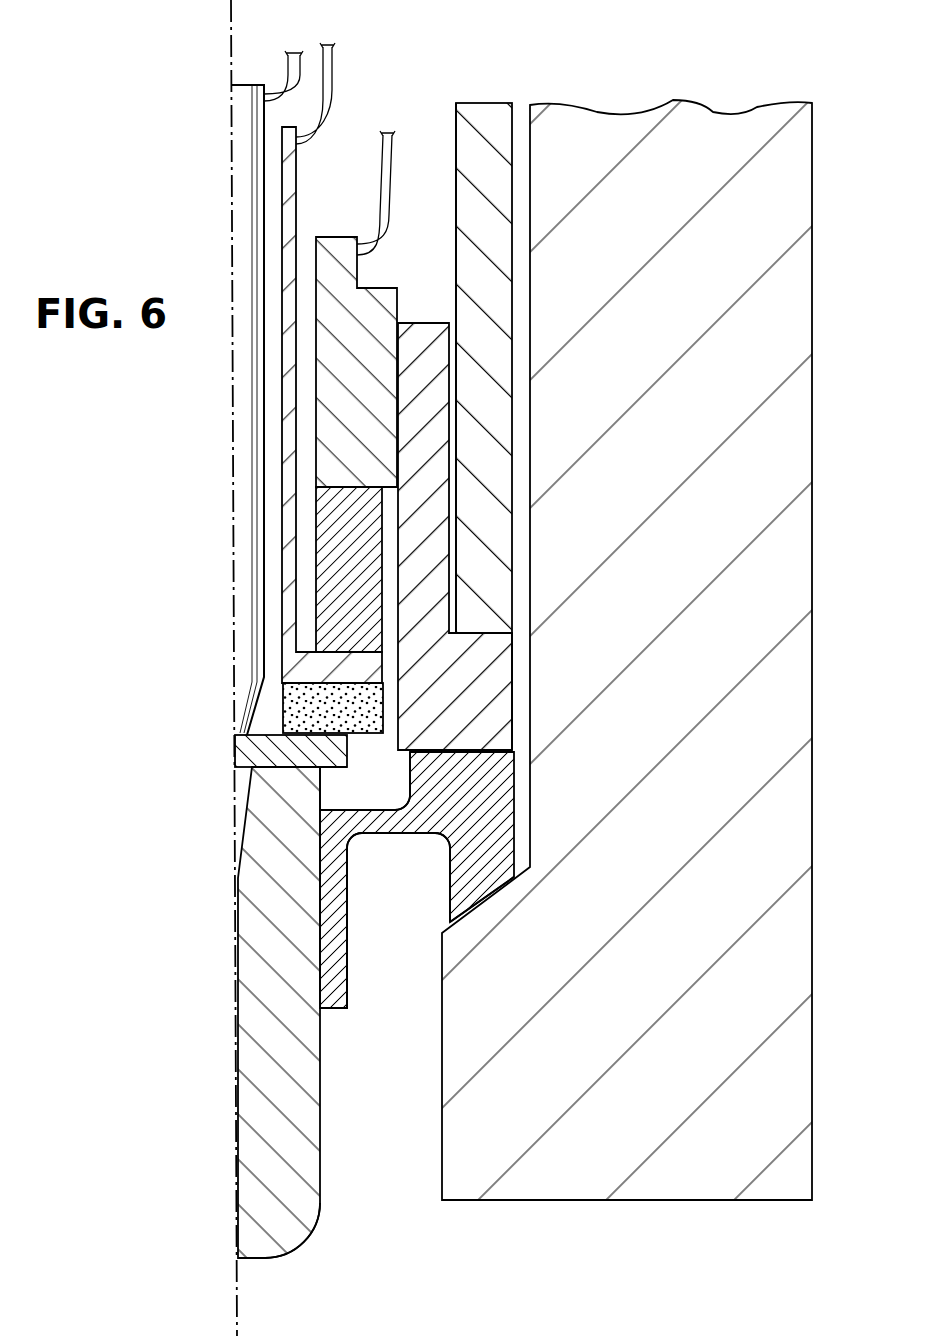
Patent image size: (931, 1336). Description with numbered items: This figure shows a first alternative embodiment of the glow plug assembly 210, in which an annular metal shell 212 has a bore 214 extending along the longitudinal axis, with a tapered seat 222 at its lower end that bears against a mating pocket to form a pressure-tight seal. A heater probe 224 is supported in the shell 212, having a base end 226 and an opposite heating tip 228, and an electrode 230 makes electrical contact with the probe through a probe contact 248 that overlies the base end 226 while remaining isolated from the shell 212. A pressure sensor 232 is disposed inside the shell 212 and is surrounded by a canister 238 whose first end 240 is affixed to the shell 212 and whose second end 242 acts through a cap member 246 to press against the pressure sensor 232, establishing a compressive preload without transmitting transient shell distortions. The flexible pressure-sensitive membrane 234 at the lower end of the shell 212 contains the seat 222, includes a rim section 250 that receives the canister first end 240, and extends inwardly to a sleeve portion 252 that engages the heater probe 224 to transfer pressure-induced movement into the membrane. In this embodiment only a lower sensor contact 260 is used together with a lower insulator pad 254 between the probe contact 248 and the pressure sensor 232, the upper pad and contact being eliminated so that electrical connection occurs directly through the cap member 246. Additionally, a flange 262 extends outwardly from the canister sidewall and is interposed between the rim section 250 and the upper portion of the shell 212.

The glow plug assembly 210 is at (390, 40).
The shell 212 is at (490, 98).
The bore 214 is at (455, 130).
The seat 222 is at (490, 900).
The heater probe 224 is at (428, 1176).
The base end 226 is at (270, 765).
The heating tip 228 is at (250, 1262).
The electrode 230 is at (243, 150).
The pressure sensor 232 is at (388, 571).
The pressure-sensitive membrane 234 is at (376, 834).
The canister 238 is at (458, 437).
The first end 240 is at (463, 753).
The second end 242 is at (400, 322).
The cap member 246 is at (384, 284).
The probe contact 248 is at (352, 753).
The rim section 250 is at (515, 805).
The sleeve portion 252 is at (348, 972).
The lower insulator pad 254 is at (300, 708).
The lower sensor contact 260 is at (278, 662).
The flange 262 is at (513, 704).